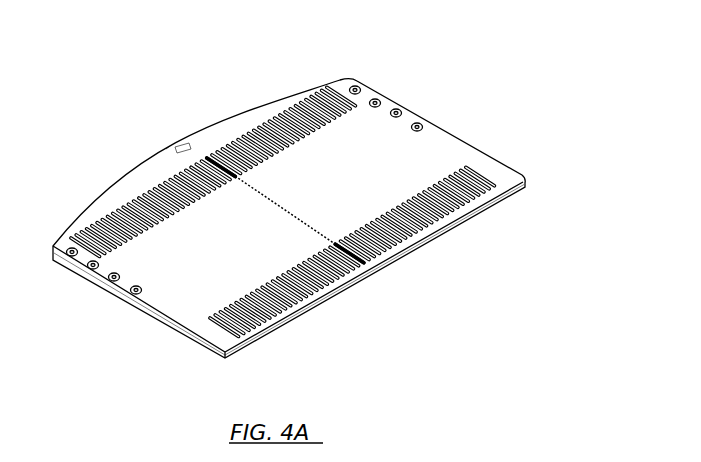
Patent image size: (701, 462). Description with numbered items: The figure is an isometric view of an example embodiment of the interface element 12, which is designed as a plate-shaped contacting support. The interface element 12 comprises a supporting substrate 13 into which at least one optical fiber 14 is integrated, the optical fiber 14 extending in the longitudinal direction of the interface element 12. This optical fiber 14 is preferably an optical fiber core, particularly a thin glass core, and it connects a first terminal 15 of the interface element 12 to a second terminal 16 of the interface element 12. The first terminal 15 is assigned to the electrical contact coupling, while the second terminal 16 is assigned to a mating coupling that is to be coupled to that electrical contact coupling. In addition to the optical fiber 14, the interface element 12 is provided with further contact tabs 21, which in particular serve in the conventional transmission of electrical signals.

The interface element 12 is at (593, 82).
The supporting substrate 13 is at (367, 143).
The optical fiber 14 is at (337, 243).
The first terminal 15 is at (213, 170).
The second terminal 16 is at (347, 250).
The contact tabs 21 is at (142, 200).